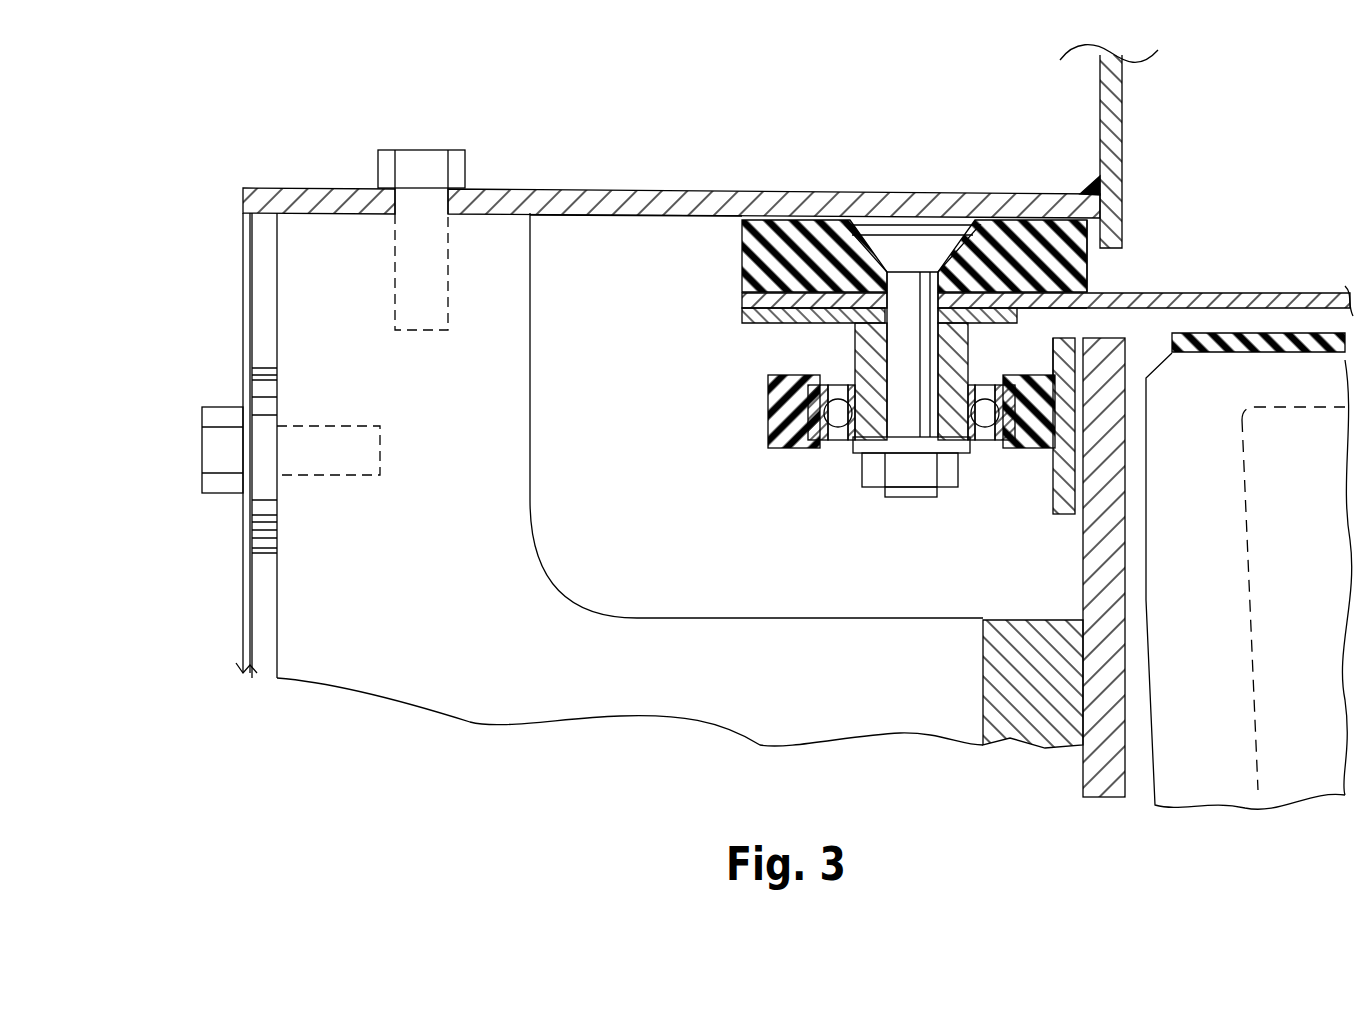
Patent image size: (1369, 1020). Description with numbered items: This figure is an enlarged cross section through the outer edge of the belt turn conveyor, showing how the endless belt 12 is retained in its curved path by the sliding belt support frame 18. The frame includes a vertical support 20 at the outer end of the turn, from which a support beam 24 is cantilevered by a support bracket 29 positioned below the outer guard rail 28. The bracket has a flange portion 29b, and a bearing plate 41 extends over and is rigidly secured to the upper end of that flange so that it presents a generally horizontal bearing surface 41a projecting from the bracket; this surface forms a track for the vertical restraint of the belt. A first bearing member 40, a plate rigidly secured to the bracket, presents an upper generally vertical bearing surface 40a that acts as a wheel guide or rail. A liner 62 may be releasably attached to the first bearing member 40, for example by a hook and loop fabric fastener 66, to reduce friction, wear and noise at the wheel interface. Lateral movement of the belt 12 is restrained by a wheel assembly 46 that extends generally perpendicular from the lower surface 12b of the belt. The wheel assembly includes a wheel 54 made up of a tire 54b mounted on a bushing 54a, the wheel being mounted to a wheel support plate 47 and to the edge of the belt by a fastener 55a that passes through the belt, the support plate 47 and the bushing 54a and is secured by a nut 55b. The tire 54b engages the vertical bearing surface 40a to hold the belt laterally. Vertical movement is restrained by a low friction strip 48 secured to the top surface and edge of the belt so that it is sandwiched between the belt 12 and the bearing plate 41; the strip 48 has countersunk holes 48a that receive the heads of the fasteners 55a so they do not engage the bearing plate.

The sliding belt support frame 18 is at (210, 262).
The vertical support 20 is at (243, 597).
The outer guard rail 28 is at (1112, 133).
The support bracket 29 is at (568, 492).
The flange portion 29b is at (455, 348).
The bearing plate 41 is at (595, 207).
The horizontally oriented bearing surface 41a is at (660, 218).
The wheel support plate 47 is at (773, 324).
The low friction strip 48 is at (783, 228).
The countersunk hole 48a is at (878, 235).
The endless belt 12 is at (1237, 295).
The lower surface 12b is at (1040, 322).
The liner 62 is at (1087, 288).
The hook and loop fabric fastener 66 is at (1087, 355).
The support beam 24 is at (1250, 318).
The first bearing member 40 is at (1106, 566).
The upper vertical bearing surface 40a is at (1083, 556).
The wheel assembly 46 is at (880, 535).
The wheel 54 is at (755, 413).
The bushing 54a is at (855, 345).
The tire 54b is at (787, 447).
The fastener 55a is at (845, 482).
The nut 55b is at (1030, 446).